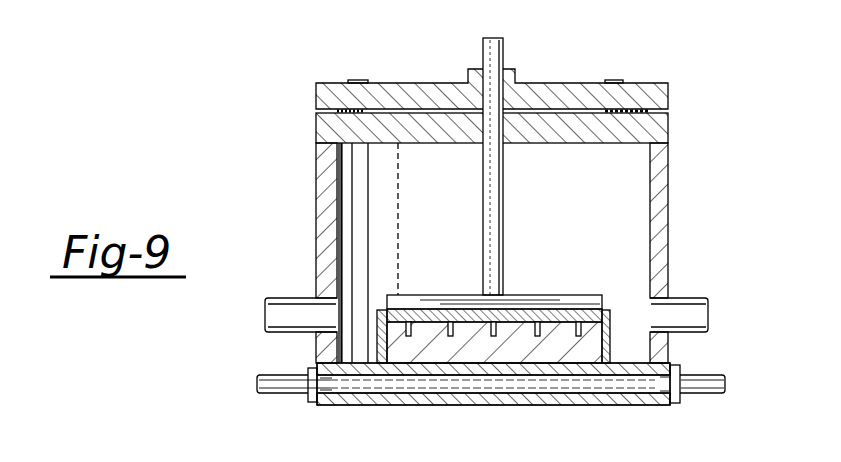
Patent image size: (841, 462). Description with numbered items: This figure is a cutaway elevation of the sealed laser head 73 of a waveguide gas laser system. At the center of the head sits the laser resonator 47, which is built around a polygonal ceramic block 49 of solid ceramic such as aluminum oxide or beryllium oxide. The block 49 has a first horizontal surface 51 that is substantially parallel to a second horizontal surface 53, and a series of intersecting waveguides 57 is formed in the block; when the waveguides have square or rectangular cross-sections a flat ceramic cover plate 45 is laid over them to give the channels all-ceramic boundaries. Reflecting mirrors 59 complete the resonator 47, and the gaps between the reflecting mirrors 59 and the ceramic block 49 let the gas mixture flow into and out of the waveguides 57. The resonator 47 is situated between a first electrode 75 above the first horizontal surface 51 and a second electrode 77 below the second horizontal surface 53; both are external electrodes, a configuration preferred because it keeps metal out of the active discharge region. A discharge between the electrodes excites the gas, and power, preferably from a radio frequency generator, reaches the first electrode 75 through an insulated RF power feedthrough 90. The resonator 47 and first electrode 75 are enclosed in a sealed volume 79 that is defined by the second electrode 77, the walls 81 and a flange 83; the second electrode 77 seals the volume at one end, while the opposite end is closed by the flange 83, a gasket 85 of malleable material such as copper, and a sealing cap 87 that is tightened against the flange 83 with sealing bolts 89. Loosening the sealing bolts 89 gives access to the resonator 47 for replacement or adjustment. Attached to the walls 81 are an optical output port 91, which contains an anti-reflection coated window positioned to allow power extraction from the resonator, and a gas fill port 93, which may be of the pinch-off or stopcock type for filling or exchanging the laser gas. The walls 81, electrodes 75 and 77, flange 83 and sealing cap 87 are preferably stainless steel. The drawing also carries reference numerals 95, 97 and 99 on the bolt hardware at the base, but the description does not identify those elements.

The ceramic cover plate 45 is at (518, 322).
The laser resonator 47 is at (620, 308).
The polygonal ceramic block 49 is at (586, 352).
The first horizontal surface 51 is at (583, 316).
The second horizontal surface 53 is at (525, 352).
The intersecting waveguides 57 is at (410, 322).
The reflecting mirrors 59 is at (382, 364).
The sealed laser head 73 is at (706, 212).
The first electrode 75 is at (552, 303).
The second electrode 77 is at (456, 403).
The sealed volume 79 is at (654, 162).
The walls 81 is at (316, 222).
The flange 83 is at (658, 132).
The gasket 85 is at (632, 110).
The sealing cap 87 is at (662, 98).
The sealing bolts 89 is at (613, 80).
The insulated RF power feedthrough 90 is at (502, 52).
The optical output port 91 is at (700, 305).
The gas fill port 93 is at (288, 305).
The bolt head 95 is at (311, 402).
The nut 97 is at (652, 392).
The tie rod 99 is at (272, 391).